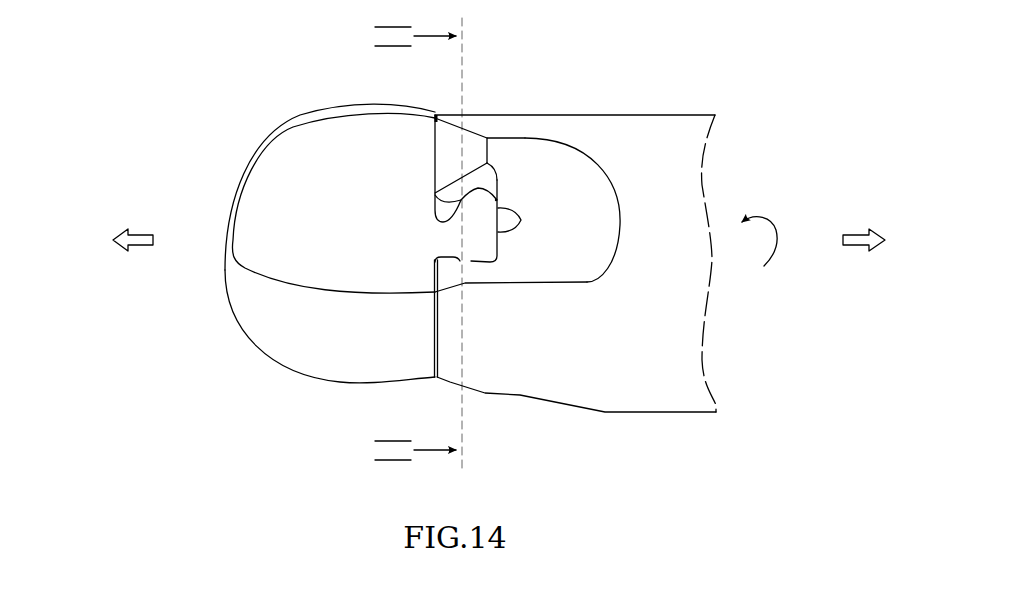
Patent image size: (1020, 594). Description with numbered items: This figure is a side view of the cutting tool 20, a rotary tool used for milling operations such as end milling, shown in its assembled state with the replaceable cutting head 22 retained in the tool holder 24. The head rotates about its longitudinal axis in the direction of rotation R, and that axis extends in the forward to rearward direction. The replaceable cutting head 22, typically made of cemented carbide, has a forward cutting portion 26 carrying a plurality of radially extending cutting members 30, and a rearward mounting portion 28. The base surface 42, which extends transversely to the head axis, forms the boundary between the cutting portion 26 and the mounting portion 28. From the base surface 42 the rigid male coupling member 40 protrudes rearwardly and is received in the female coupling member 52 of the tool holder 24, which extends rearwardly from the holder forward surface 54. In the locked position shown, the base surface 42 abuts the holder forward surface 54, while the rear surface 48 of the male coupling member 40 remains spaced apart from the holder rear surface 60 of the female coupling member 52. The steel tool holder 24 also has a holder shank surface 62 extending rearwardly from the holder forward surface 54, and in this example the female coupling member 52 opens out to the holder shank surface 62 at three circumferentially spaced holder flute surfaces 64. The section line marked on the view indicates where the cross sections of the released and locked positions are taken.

The cutting tool 20 is at (172, 167).
The replaceable cutting head 22 is at (263, 128).
The tool holder 24 is at (645, 95).
The cutting portion 26 is at (315, 398).
The mounting portion 28 is at (497, 158).
The cutting member 30 is at (328, 93).
The male coupling member 40 is at (475, 262).
The base surface 42 is at (437, 140).
The rear surface 48 is at (498, 243).
The female coupling member 52 is at (442, 247).
The holder forward surface 54 is at (435, 157).
The holder rear surface 60 is at (500, 200).
The holder shank surface 62 is at (677, 138).
The holder flute surface 64 is at (563, 180).